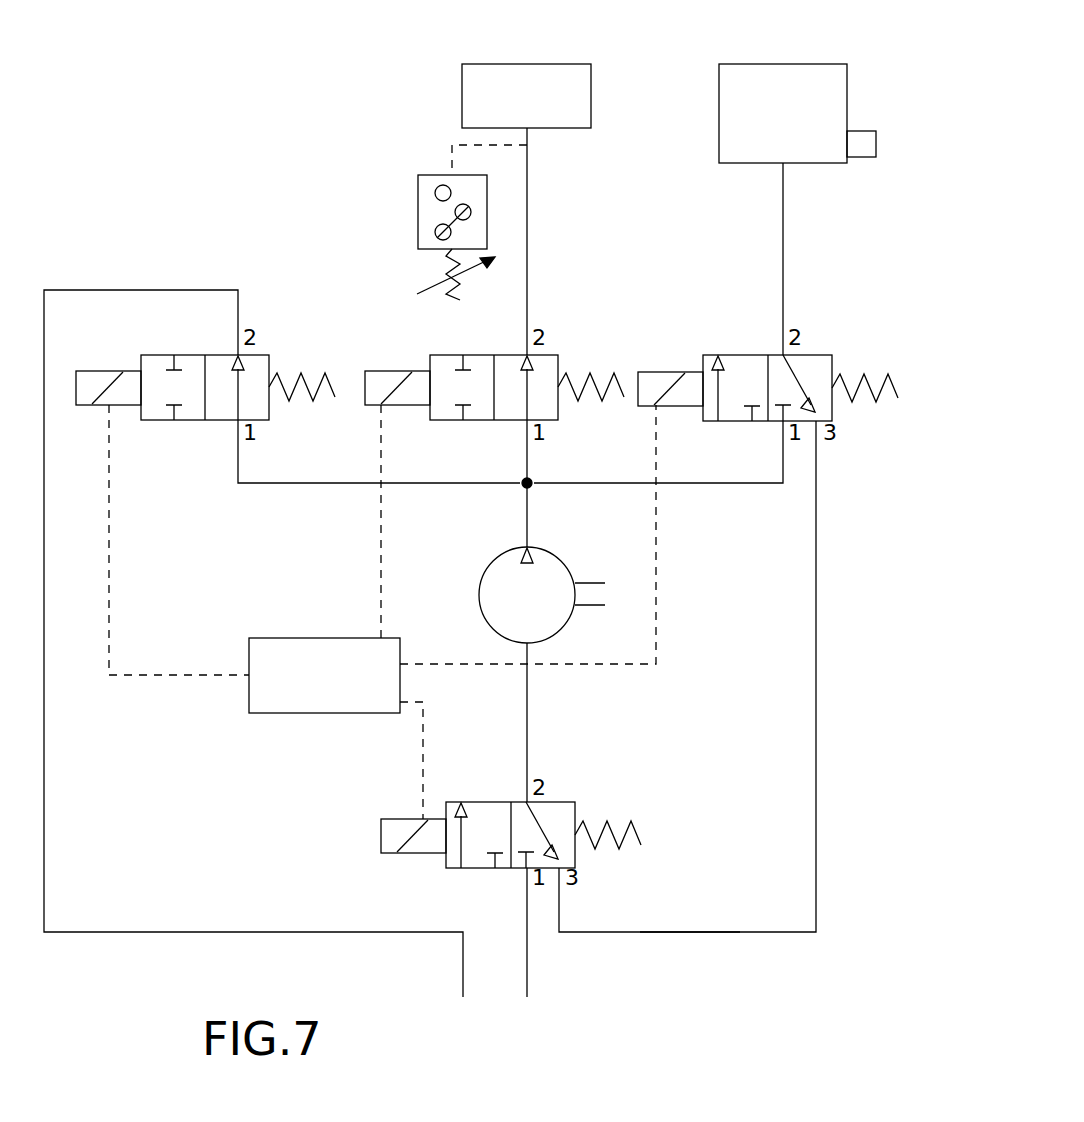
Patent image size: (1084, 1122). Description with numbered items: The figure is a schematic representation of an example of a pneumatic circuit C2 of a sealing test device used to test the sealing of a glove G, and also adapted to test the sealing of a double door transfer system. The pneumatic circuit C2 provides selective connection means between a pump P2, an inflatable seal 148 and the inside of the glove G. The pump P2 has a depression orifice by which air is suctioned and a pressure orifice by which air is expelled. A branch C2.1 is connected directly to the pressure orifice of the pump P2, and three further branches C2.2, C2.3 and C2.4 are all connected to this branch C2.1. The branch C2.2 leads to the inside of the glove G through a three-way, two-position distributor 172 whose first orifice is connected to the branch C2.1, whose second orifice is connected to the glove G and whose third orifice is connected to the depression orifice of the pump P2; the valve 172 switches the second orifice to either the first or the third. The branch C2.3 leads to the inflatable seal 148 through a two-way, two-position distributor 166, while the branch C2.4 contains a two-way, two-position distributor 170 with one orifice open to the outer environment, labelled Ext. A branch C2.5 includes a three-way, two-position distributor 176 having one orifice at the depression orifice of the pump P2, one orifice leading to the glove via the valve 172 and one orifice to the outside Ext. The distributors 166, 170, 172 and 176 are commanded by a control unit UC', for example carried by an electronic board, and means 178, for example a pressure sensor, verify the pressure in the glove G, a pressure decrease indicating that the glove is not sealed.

The inflatable seal 148 is at (582, 80).
The glove G is at (837, 88).
The means for verifying the pressure in the glove 178 is at (867, 143).
The distributor 2/2 166 is at (560, 362).
The distributor 3/2 172 is at (825, 362).
The distributor 2/2 170 is at (195, 410).
The distributor 3/2 176 is at (558, 813).
The branch C2.3 is at (527, 470).
The branch C2.1 is at (527, 533).
The branch C2.4 is at (332, 483).
The branch C2.2 is at (715, 484).
The branch C2.5 is at (816, 683).
The pneumatic circuit C2 is at (627, 946).
The pump P2 is at (540, 625).
The control unit UC' is at (382, 612).
The exterior outlet Ext is at (485, 948).